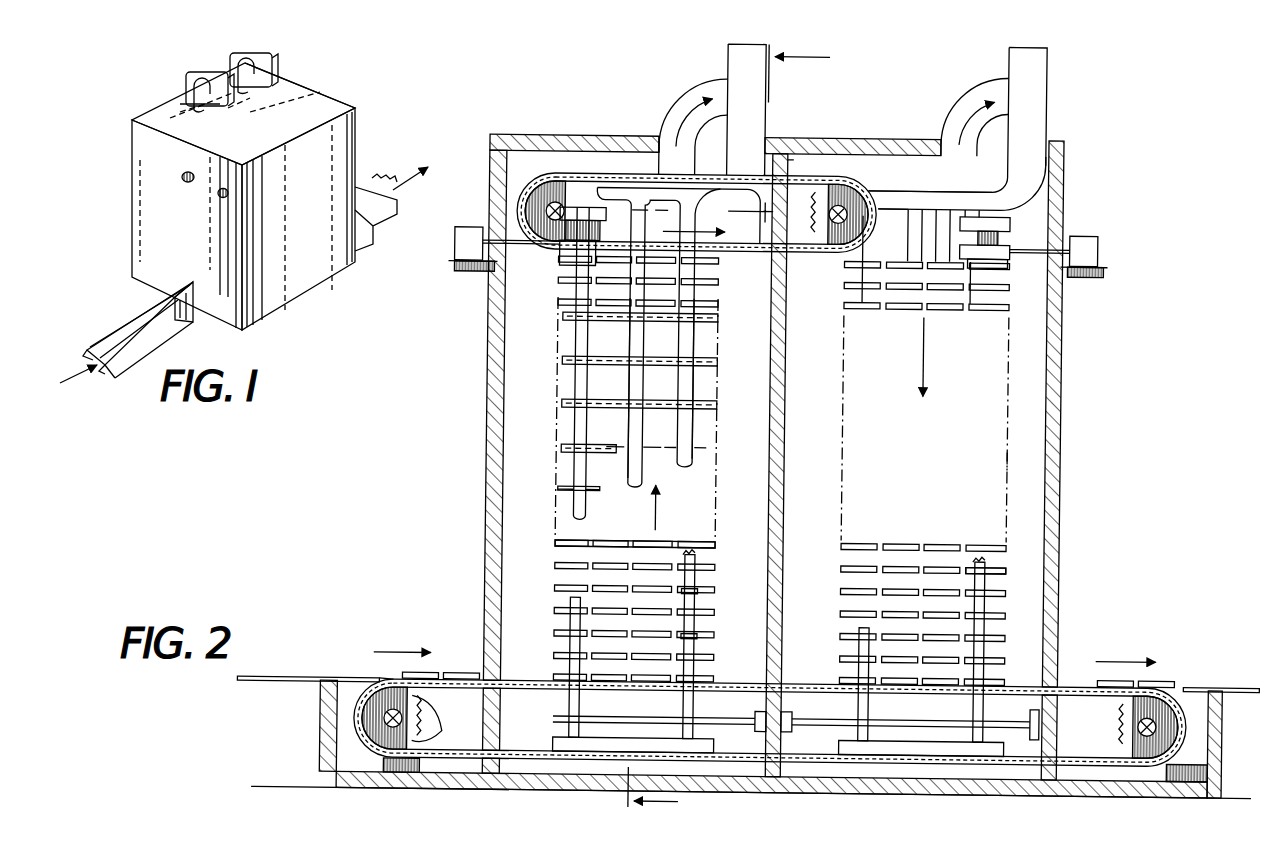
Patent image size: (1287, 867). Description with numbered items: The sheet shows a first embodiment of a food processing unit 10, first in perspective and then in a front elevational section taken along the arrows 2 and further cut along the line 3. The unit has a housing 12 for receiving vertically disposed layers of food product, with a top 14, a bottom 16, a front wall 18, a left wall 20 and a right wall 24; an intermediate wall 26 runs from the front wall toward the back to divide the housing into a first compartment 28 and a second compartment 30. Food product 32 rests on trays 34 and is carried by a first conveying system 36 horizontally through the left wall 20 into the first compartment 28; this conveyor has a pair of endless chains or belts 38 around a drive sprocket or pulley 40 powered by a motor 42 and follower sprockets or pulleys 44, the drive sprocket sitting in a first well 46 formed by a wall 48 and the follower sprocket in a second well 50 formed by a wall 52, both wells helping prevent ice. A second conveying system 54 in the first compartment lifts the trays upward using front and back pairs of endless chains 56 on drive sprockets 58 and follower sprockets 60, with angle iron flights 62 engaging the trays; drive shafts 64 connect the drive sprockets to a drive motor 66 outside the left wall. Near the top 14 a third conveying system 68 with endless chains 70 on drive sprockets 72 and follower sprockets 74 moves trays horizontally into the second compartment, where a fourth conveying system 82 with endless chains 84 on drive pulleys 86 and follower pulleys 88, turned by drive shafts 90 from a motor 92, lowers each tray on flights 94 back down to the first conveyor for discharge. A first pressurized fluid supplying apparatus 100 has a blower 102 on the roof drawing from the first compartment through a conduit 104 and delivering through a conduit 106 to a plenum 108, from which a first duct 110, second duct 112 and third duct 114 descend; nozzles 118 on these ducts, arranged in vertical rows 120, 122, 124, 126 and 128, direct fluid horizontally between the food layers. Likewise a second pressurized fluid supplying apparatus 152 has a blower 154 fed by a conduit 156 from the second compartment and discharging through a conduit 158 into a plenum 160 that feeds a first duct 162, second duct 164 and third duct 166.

In FIG. 1, the section line 2- 2 is at (353, 60).
In FIG. 2, the section line 3- 3 is at (736, 430).
In FIG. 1, the food processing unit 10 is at (318, 88).
In FIG. 2, the food processing unit 10 is at (1115, 95).
In FIG. 1, the housing 12 is at (363, 140).
In FIG. 2, the housing 12 is at (858, 140).
In FIG. 1, the top 14 is at (268, 130).
In FIG. 2, the top 14 is at (515, 140).
In FIG. 2, the bottom 16 is at (556, 748).
In FIG. 1, the front wall 18 is at (305, 275).
In FIG. 1, the left wall 20 is at (192, 236).
In FIG. 2, the left wall 20 is at (486, 380).
In FIG. 2, the right wall 24 is at (1060, 350).
In FIG. 2, the intermediate wall 26 is at (784, 335).
In FIG. 2, the first compartment 28 is at (762, 467).
In FIG. 2, the second compartment 30 is at (826, 406).
In FIG. 1, the food product 32 is at (160, 295).
In FIG. 2, the food product 32 is at (440, 680).
In FIG. 2, the trays 34 is at (462, 683).
In FIG. 2, the first conveying system 36 is at (375, 670).
In FIG. 2, the endless chains or belts 38 is at (460, 693).
In FIG. 2, the drive sprocket or pulley 40 is at (1160, 705).
In FIG. 2, the motor 42 is at (1118, 728).
In FIG. 2, the follower sprockets or pulleys 44 is at (372, 712).
In FIG. 2, the first well 46 is at (1225, 712).
In FIG. 2, the wall 48 is at (1225, 765).
In FIG. 2, the second well 50 is at (330, 740).
In FIG. 2, the wall 52 is at (323, 765).
In FIG. 2, the second conveying system 54 is at (742, 535).
In FIG. 2, the endless chains or belts 56 is at (572, 620).
In FIG. 2, the drive sprockets or pulleys 58 is at (565, 250).
In FIG. 2, the follower sprockets or pulleys 60 is at (712, 722).
In FIG. 2, the flights 62 is at (698, 625).
In FIG. 2, the drive shafts 64 is at (495, 275).
In FIG. 2, the drive motor 66 is at (455, 262).
In FIG. 2, the third conveying system 68 is at (880, 190).
In FIG. 2, the endless chains 70 is at (595, 175).
In FIG. 2, the drive sprockets 72 is at (522, 214).
In FIG. 2, the follower sprockets 74 is at (850, 190).
In FIG. 2, the fourth conveying system 82 is at (1010, 460).
In FIG. 2, the endless chains 84 is at (862, 628).
In FIG. 2, the drive pulleys 86 is at (1005, 232).
In FIG. 2, the follower pulleys 88 is at (845, 735).
In FIG. 2, the drive shafts 90 is at (1040, 237).
In FIG. 2, the motor 92 is at (1085, 230).
In FIG. 2, the flights 94 is at (1008, 615).
In FIG. 1, the first pressurized fluid supplying apparatus 100 is at (172, 84).
In FIG. 2, the first pressurized fluid supplying apparatus 100 is at (695, 80).
In FIG. 1, the blower or fan 102 is at (180, 78).
In FIG. 2, the blower or fan 102 is at (770, 100).
In FIG. 1, the conduit 104 is at (185, 112).
In FIG. 2, the conduit 104 is at (660, 110).
In FIG. 1, the conduit 106 is at (235, 108).
In FIG. 2, the conduit 106 is at (760, 140).
In FIG. 2, the plenum 108 is at (660, 180).
In FIG. 2, the first duct 110 is at (574, 512).
In FIG. 2, the second duct 112 is at (632, 490).
In FIG. 2, the third duct 114 is at (694, 385).
In FIG. 2, the nozzles 118 is at (660, 450).
In FIG. 2, the row of nozzles 120 is at (561, 318).
In FIG. 2, the row of nozzles 122 is at (561, 362).
In FIG. 2, the row of nozzles 124 is at (561, 405).
In FIG. 2, the row of nozzles 126 is at (561, 450).
In FIG. 2, the row of nozzles 128 is at (560, 492).
In FIG. 1, the second pressurized fluid supplying apparatus 152 is at (262, 90).
In FIG. 2, the second pressurized fluid supplying apparatus 152 is at (1045, 70).
In FIG. 1, the blower 154 is at (242, 72).
In FIG. 2, the conduit 156 is at (955, 95).
In FIG. 1, the conduit 158 is at (300, 58).
In FIG. 2, the conduit 158 is at (1035, 148).
In FIG. 2, the plenum 160 is at (940, 190).
In FIG. 2, the first duct 162 is at (917, 294).
In FIG. 2, the second duct 164 is at (915, 305).
In FIG. 2, the third duct 166 is at (965, 305).